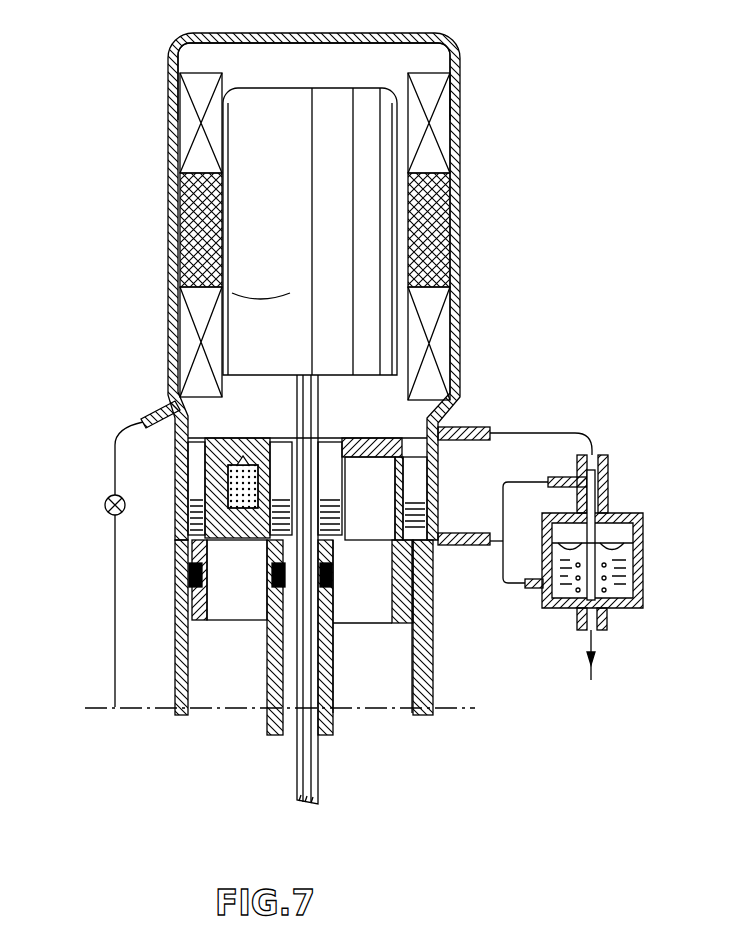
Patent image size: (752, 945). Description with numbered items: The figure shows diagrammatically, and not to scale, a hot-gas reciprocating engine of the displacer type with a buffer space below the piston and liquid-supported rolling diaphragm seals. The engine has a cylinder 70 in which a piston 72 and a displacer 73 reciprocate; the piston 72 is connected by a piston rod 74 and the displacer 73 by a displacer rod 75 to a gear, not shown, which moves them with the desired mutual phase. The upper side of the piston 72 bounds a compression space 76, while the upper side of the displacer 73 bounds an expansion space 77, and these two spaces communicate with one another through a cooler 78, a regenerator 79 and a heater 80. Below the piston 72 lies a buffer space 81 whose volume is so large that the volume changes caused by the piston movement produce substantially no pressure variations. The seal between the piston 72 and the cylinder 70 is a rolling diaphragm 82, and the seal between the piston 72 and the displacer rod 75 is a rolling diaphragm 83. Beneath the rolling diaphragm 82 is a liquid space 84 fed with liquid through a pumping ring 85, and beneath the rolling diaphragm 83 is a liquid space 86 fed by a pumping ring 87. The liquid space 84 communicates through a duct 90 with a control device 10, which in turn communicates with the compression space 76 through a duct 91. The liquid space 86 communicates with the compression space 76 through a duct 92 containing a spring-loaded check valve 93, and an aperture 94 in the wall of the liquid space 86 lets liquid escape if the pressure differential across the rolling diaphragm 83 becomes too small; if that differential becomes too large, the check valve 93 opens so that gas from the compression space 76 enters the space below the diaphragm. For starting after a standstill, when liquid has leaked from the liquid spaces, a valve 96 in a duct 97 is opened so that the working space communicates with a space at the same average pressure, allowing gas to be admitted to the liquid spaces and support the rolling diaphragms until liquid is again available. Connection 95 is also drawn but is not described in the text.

The control device 10 is at (648, 512).
The cylinder 70 is at (423, 660).
The piston 72 is at (380, 440).
The displacer 73 is at (232, 293).
The piston rod 74 is at (283, 640).
The displacer rod 75 is at (290, 675).
The compression space 76 is at (268, 413).
The expansion space 77 is at (326, 80).
The cooler 78 is at (180, 336).
The regenerator 79 is at (190, 224).
The heater 80 is at (188, 113).
The buffer space 81 is at (376, 688).
The rolling diaphragm 82 is at (187, 478).
The rolling diaphragm 83 is at (332, 466).
The liquid space 84 is at (182, 508).
The pumping ring 85 is at (188, 573).
The liquid space 86 is at (338, 512).
The pumping ring 87 is at (275, 578).
The duct 90 is at (493, 548).
The duct 91 is at (514, 432).
The duct 92 is at (229, 580).
The spring-loaded check valve 93 is at (200, 470).
The aperture 94 is at (345, 470).
The conduit 95 is at (527, 478).
The valve 96 is at (100, 505).
The duct 97 is at (115, 568).